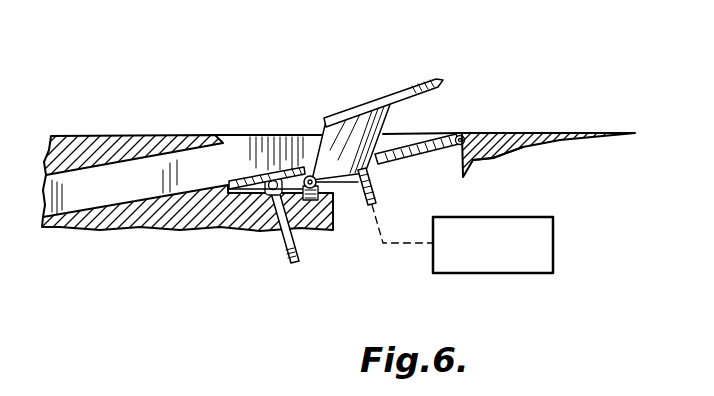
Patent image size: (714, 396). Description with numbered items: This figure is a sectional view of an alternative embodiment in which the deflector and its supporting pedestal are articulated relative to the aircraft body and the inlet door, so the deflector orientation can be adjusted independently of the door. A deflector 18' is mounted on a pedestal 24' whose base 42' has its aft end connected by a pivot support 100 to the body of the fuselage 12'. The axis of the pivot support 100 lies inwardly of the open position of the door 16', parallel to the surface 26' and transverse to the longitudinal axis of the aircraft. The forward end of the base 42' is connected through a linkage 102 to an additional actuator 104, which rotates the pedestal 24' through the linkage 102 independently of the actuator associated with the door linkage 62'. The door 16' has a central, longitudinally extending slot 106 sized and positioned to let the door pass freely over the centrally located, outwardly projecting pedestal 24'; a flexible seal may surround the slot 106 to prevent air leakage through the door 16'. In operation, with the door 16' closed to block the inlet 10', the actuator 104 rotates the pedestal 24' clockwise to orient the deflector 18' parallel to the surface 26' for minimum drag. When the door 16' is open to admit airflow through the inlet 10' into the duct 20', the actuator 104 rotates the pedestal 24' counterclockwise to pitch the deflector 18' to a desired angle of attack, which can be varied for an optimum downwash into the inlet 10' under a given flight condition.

The inlet 10' is at (253, 124).
The duct 20' is at (110, 188).
The door 16' is at (267, 142).
The slot 106 is at (310, 170).
The deflector 18' is at (383, 77).
The pedestal 24' is at (420, 133).
The fuselage 12' is at (548, 133).
The surface 26' is at (509, 157).
The linkage 102 is at (374, 193).
The actuator 104 is at (553, 228).
The base 42' is at (340, 223).
The pivot support 100 is at (313, 203).
The door linkage 62' is at (188, 237).